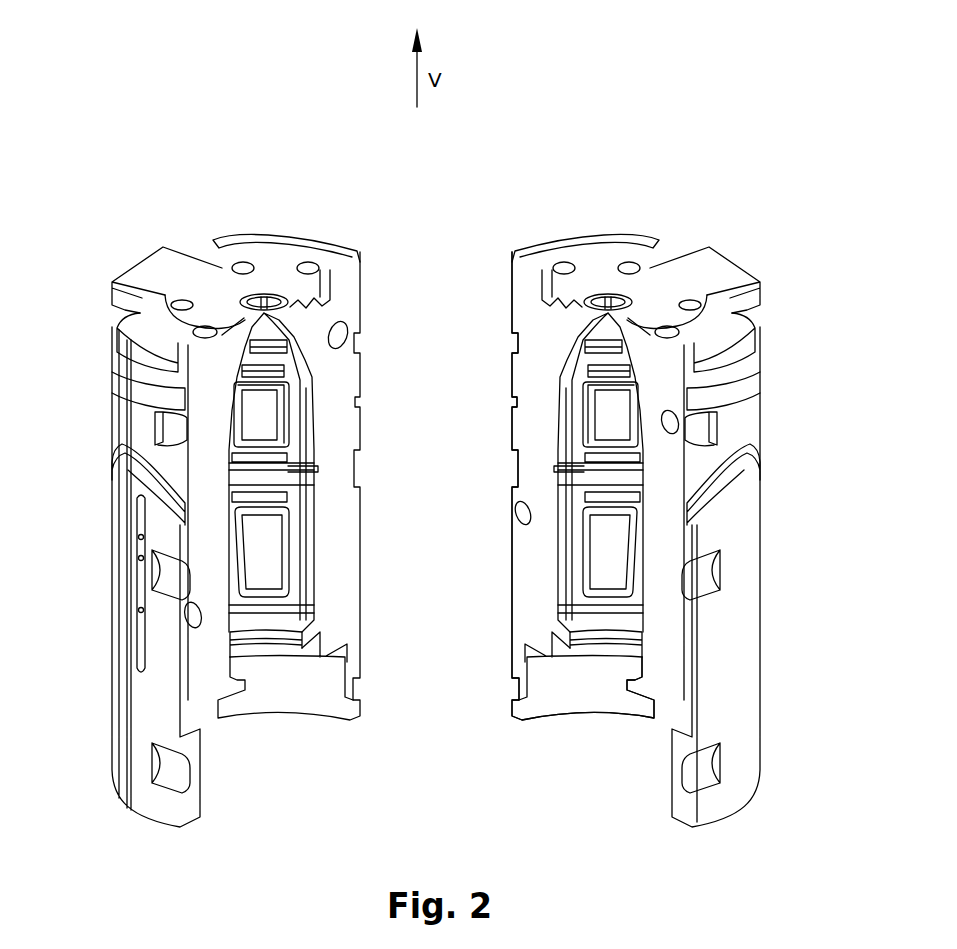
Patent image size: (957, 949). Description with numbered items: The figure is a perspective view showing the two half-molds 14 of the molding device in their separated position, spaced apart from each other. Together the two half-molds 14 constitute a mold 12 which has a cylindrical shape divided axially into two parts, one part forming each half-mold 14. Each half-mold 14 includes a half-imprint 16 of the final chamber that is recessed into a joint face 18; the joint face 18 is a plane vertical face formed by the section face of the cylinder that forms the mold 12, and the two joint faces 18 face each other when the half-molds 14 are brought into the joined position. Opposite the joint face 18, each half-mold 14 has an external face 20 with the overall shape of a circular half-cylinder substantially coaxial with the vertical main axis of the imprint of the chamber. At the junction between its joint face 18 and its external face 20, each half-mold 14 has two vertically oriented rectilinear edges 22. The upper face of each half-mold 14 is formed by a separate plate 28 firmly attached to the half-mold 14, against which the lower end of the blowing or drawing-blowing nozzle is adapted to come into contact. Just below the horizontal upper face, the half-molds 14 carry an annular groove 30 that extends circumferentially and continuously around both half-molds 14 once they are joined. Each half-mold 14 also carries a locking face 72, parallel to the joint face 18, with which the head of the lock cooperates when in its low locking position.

The mold 12 is at (443, 205).
The half-mold 14 is at (313, 238).
The half-imprint 16 is at (264, 577).
The joint face 18 is at (344, 550).
The external face 20 is at (118, 657).
The rectilinear edges 22 is at (362, 425).
The plate 28 is at (213, 288).
The annular groove 30 is at (148, 383).
The locking face 72 is at (162, 428).